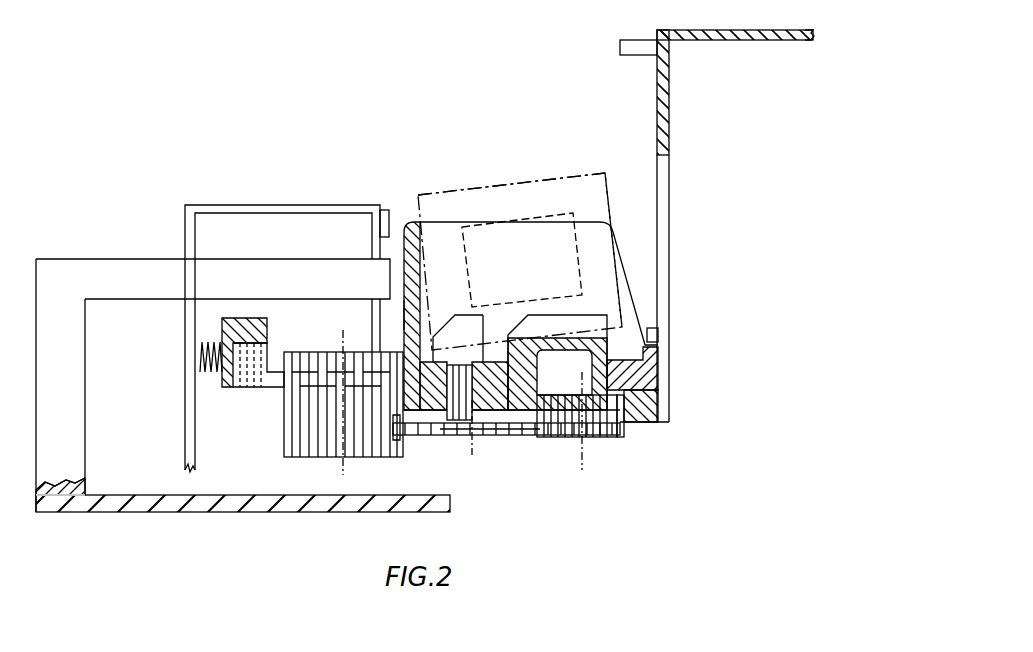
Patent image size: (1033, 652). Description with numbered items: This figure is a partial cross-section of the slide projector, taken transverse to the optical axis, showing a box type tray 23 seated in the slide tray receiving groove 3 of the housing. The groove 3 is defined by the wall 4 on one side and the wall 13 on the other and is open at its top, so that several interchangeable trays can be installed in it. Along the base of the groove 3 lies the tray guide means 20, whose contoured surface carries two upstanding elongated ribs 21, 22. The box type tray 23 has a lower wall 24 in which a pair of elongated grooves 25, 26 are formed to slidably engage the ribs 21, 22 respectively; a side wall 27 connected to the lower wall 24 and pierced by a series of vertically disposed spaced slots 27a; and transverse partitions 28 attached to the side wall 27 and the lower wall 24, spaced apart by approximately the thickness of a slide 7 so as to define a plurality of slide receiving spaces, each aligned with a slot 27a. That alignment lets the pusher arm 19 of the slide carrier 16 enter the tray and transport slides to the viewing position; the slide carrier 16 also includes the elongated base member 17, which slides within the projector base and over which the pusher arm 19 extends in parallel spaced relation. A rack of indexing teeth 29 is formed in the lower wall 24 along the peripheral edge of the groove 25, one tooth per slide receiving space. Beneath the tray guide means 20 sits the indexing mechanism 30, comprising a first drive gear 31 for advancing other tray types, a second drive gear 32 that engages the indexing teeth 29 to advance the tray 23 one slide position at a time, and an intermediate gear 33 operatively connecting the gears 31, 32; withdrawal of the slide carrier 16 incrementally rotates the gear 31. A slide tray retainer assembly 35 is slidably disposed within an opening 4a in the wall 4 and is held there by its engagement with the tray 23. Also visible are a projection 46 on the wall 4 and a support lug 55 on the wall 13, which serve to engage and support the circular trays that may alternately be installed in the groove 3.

The slide tray receiving groove 3 is at (523, 178).
The wall 4 is at (287, 205).
The opening 4a is at (298, 338).
The slide 7 is at (598, 162).
The wall 13 is at (657, 80).
The slide carrier 16 is at (85, 432).
The base member 17 is at (236, 505).
The pusher arm 19 is at (148, 268).
The tray guide means 20 is at (652, 368).
The rib 21 is at (557, 374).
The rib 22 is at (455, 433).
The box type tray 23 is at (448, 222).
The lower wall 24 is at (647, 407).
The groove 25 is at (555, 320).
The groove 26 is at (462, 327).
The side wall 27 is at (403, 228).
The slot 27a is at (410, 297).
The transverse partition 28 is at (588, 222).
The rack of indexing teeth 29 is at (623, 427).
The indexing mechanism 30 is at (423, 442).
The first drive gear 31 is at (337, 458).
The second drive gear 32 is at (598, 437).
The intermediate gear 33 is at (487, 437).
The slide tray retainer assembly 35 is at (272, 387).
The projection 46 is at (387, 227).
The support lug 55 is at (648, 325).